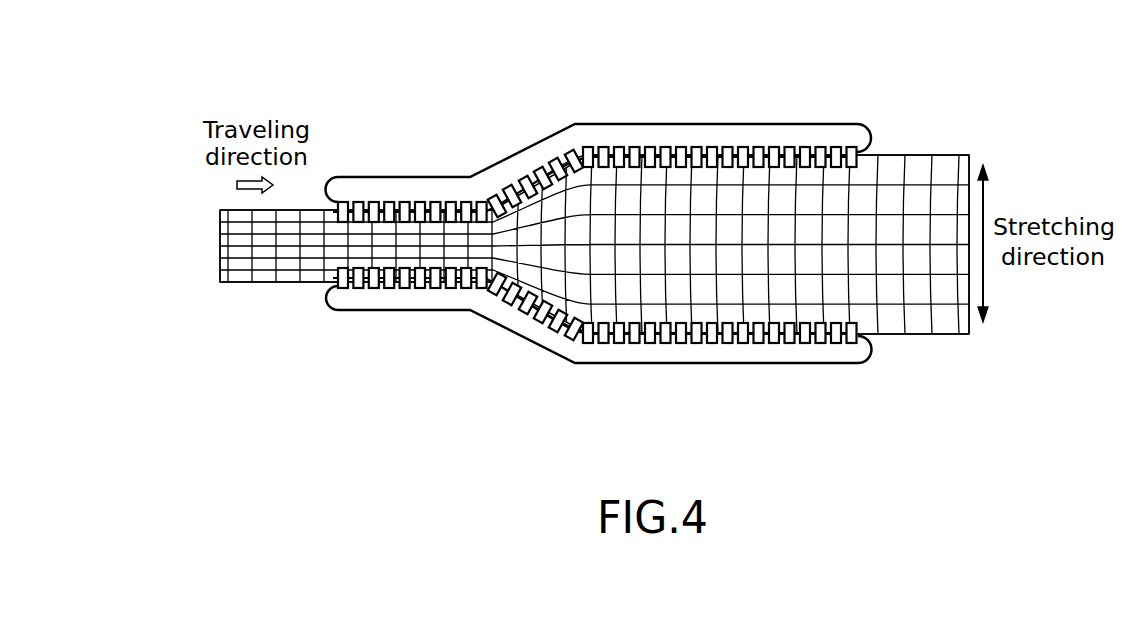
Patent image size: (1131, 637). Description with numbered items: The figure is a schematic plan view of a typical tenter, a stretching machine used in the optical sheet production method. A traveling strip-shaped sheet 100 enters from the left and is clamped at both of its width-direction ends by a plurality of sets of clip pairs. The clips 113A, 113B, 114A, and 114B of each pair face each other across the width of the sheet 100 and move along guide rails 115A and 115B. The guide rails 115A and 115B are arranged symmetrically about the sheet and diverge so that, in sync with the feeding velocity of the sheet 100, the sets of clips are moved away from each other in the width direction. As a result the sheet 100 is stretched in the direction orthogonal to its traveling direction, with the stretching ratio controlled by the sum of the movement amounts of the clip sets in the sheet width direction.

The strip-shaped sheet 100 is at (268, 282).
The clip 113A is at (712, 148).
The clip 113B is at (712, 344).
The clip 114A is at (786, 131).
The clip 114B is at (817, 356).
The guide rail 115A is at (598, 127).
The guide rail 115B is at (588, 364).